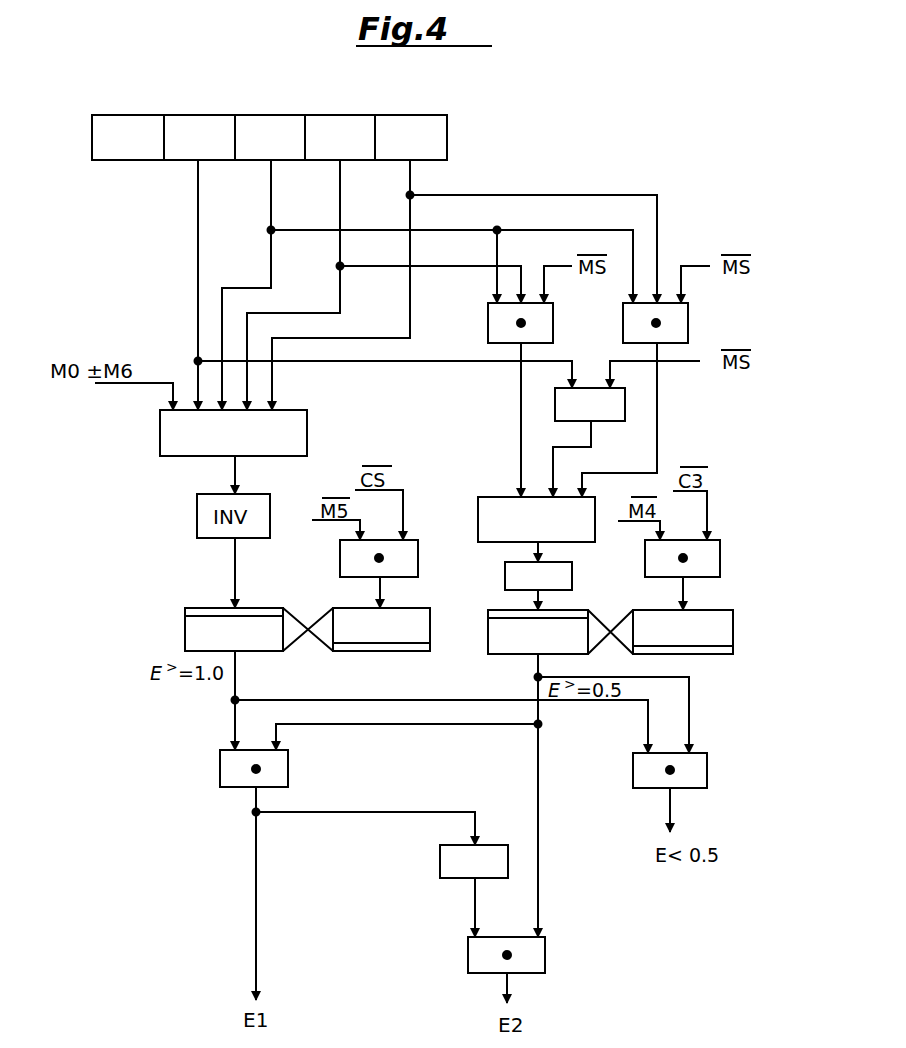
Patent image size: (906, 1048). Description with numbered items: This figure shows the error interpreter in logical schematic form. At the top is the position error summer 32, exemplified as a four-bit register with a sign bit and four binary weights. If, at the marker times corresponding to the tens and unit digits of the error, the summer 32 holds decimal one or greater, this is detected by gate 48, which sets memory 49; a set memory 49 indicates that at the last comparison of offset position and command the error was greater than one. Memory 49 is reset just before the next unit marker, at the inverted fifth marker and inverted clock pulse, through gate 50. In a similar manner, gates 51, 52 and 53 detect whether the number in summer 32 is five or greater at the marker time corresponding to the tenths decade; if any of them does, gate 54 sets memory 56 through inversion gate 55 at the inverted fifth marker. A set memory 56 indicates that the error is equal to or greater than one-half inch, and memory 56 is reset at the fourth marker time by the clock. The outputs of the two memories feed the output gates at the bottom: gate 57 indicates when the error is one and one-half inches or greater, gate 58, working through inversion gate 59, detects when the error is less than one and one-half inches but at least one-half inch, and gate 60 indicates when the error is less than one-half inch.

The position error summer 32 is at (253, 115).
The gate 48 is at (309, 424).
The memory 49 is at (432, 637).
The gate 50 is at (420, 553).
The gate 51 is at (555, 325).
The gate 52 is at (690, 325).
The gate 53 is at (613, 421).
The gate 54 is at (489, 486).
The inversion gate 55 is at (505, 573).
The memory 56 is at (735, 631).
The gate 57 is at (290, 763).
The gate 58 is at (547, 952).
The inversion gate 59 is at (438, 862).
The gate 60 is at (708, 779).